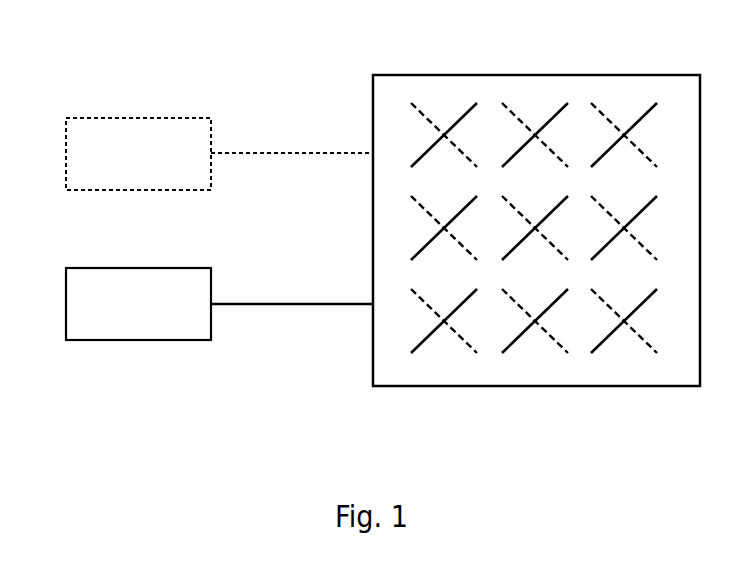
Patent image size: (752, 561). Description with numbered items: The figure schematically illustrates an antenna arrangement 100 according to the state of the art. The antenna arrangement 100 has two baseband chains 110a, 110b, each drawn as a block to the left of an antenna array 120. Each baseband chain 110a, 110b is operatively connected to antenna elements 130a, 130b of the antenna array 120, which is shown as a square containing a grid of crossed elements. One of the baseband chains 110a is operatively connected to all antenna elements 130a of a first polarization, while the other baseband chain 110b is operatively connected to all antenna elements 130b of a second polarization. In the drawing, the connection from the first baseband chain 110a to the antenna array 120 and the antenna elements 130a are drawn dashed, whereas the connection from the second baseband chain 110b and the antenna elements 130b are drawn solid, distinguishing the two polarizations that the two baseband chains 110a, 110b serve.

The antenna arrangement 100 is at (108, 48).
The baseband chain 110a is at (147, 190).
The baseband chain 110b is at (130, 341).
The antenna array 120 is at (613, 387).
The antenna element 130a is at (460, 336).
The antenna element 130b is at (422, 339).